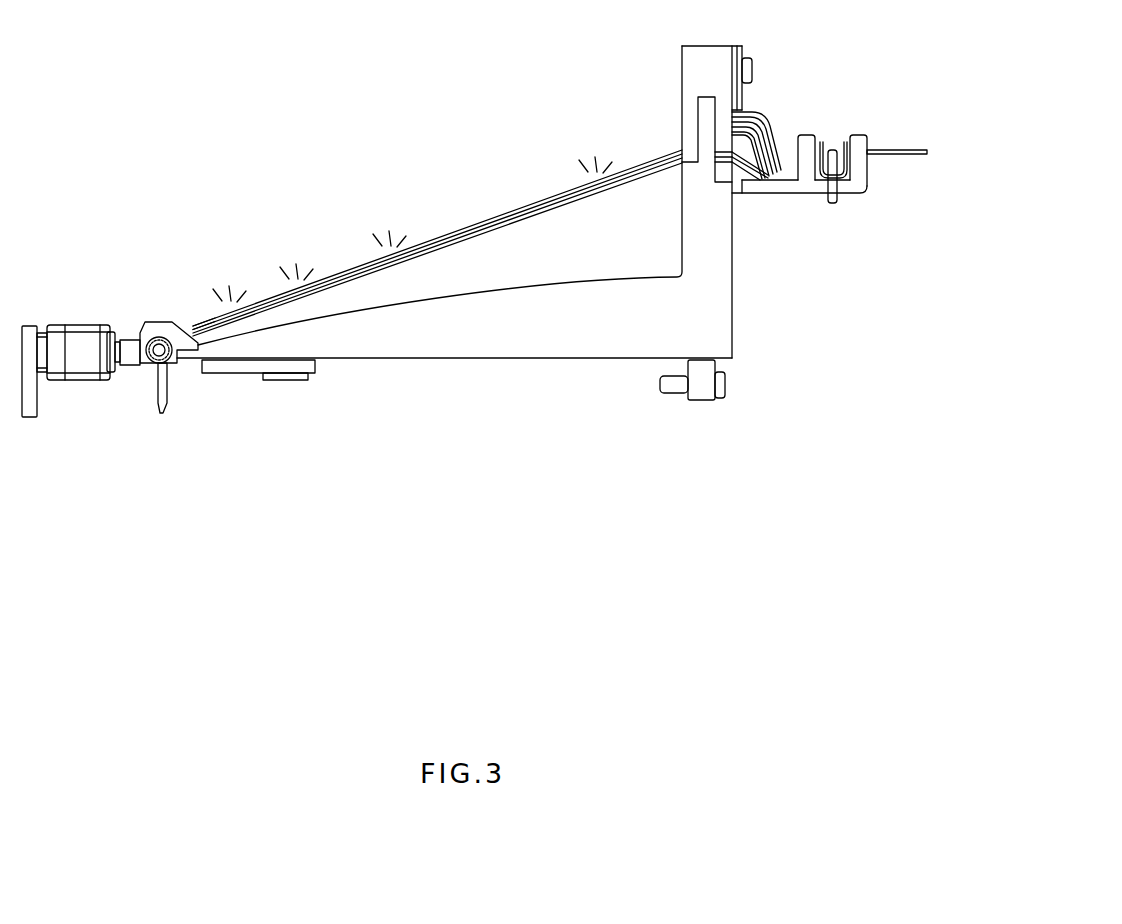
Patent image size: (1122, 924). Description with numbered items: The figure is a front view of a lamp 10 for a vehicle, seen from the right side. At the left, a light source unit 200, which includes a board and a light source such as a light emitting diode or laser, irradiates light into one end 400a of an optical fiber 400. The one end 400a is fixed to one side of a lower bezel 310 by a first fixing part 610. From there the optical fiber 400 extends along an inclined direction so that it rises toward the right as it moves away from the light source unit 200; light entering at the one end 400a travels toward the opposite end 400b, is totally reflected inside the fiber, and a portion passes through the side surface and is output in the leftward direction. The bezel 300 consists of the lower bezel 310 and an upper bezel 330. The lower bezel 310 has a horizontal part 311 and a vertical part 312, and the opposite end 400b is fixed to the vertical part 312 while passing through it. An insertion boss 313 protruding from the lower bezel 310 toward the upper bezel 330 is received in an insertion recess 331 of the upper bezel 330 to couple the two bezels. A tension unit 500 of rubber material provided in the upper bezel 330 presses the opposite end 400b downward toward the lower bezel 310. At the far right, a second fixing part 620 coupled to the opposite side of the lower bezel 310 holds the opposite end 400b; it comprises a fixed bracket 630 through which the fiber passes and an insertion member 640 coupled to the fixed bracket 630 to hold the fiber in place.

The lamp for a vehicle 10 is at (82, 103).
The light source unit 200 is at (79, 340).
The first fixing part 610 is at (159, 328).
The one end of the optical fiber 400a is at (189, 324).
The optical fiber 400 is at (555, 203).
The horizontal part 311 is at (464, 346).
The lower bezel 310 is at (456, 440).
The bezel 300 is at (425, 527).
The vertical part 312 is at (690, 232).
The upper bezel 330 is at (692, 68).
The insertion recess 331 is at (704, 118).
The insertion boss 313 is at (704, 142).
The tension unit 500 is at (770, 112).
The opposite end of the optical fiber 400b is at (747, 172).
The second fixing part 620 is at (913, 58).
The fixed bracket 630 is at (872, 194).
The insertion member 640 is at (830, 128).